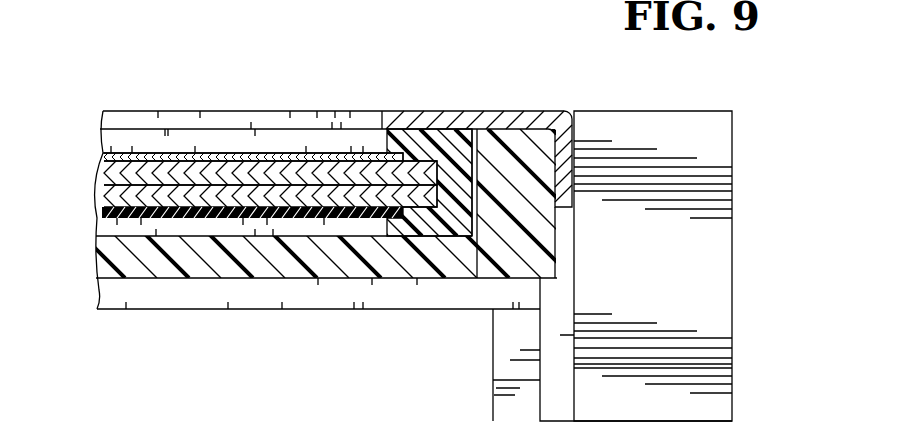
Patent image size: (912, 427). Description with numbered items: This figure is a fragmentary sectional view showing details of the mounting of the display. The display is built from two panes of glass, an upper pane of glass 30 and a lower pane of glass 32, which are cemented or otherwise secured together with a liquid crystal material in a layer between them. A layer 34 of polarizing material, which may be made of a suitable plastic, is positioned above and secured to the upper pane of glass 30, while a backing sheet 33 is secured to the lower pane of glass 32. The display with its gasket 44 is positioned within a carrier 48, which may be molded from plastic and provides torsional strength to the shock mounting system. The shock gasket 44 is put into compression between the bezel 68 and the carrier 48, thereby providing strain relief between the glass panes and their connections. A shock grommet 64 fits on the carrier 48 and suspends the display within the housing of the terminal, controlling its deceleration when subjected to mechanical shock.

The upper pane of glass 30 is at (113, 171).
The lower pane of glass 32 is at (104, 197).
The backing sheet 33 is at (103, 219).
The layer of polarizing material 34 is at (218, 155).
The gasket 44 is at (452, 148).
The carrier 48 is at (238, 265).
The shock grommet 64 is at (718, 290).
The bezel 68 is at (323, 110).